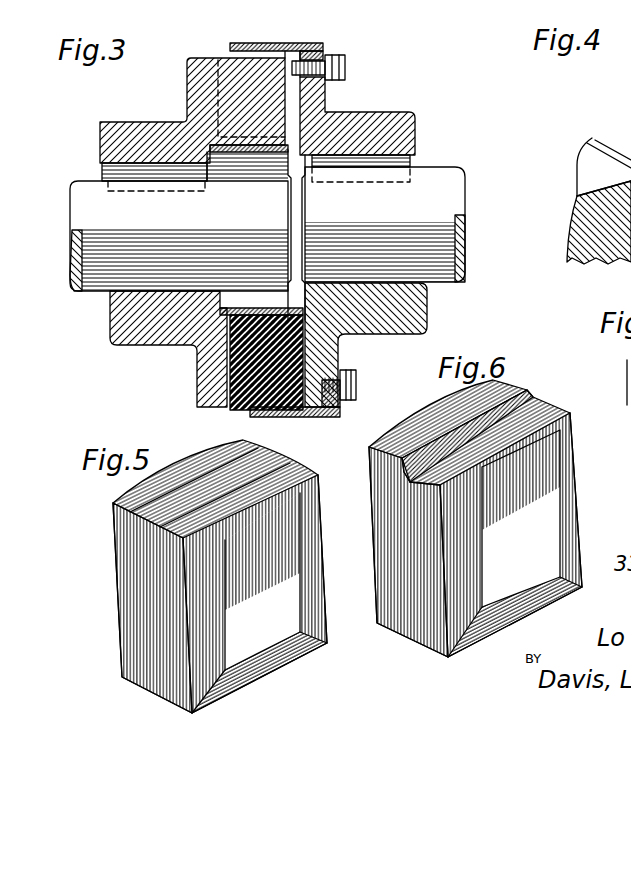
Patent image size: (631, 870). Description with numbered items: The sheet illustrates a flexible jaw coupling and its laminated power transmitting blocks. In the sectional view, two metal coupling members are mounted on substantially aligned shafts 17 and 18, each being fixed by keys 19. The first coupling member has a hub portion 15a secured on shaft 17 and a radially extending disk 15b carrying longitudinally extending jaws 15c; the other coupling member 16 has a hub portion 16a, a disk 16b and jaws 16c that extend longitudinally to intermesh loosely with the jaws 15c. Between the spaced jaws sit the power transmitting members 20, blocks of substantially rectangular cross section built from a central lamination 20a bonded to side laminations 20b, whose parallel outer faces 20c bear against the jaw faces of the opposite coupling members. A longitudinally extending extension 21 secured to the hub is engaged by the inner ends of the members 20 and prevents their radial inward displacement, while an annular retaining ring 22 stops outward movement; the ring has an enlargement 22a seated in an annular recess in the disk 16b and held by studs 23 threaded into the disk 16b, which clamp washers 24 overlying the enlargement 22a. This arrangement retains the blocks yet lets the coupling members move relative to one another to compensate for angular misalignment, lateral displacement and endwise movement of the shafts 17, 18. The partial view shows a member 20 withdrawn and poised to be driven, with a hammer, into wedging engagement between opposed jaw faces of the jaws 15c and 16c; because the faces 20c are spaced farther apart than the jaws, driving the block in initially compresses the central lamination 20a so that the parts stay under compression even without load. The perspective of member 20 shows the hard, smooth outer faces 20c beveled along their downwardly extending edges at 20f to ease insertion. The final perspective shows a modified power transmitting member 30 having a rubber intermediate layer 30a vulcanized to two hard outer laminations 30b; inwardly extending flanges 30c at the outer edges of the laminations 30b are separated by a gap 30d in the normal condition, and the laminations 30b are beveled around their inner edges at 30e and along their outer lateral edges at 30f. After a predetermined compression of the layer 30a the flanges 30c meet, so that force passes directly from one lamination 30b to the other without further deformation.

In FIG. 3, the hub portion 15a is at (107, 128).
In FIG. 3, the radially extending disk 15b is at (193, 93).
In FIG. 3, the longitudinally extending jaws 15c is at (235, 82).
In FIG. 4, the longitudinally extending jaws 15c is at (630, 118).
In FIG. 3, the coupling member 16 is at (377, 336).
In FIG. 3, the hub portion 16a is at (417, 108).
In FIG. 3, the disk 16b is at (309, 101).
In FIG. 4, the longitudinally extending jaws 16c is at (583, 238).
In FIG. 3, the shaft 17 is at (85, 293).
In FIG. 3, the shaft 18 is at (450, 198).
In FIG. 3, the keys 19 is at (103, 172).
In FIG. 3, the power transmitting members 20 is at (228, 52).
In FIG. 4, the power transmitting members 20 is at (573, 161).
In FIG. 5, the power transmitting members 20 is at (333, 571).
In FIG. 4, the central lamination 20a is at (605, 191).
In FIG. 5, the central lamination 20a is at (160, 688).
In FIG. 4, the side laminations 20b is at (595, 142).
In FIG. 5, the side laminations 20b is at (128, 647).
In FIG. 5, the outer faces 20c is at (300, 657).
In FIG. 5, the beveled edges 20f is at (317, 592).
In FIG. 3, the longitudinally extending extension 21 is at (251, 152).
In FIG. 3, the annular retaining ring 22 is at (257, 40).
In FIG. 3, the enlargement 22a is at (318, 36).
In FIG. 3, the studs 23 is at (342, 66).
In FIG. 3, the washers 24 is at (328, 52).
In FIG. 6, the power transmitting member 30 is at (416, 414).
In FIG. 6, the intermediate layer 30a is at (412, 623).
In FIG. 6, the outer laminations 30b is at (395, 463).
In FIG. 6, the inwardly extending flanges 30c is at (407, 482).
In FIG. 6, the gap 30d is at (530, 396).
In FIG. 6, the bevel 30e is at (533, 603).
In FIG. 6, the bevel 30f is at (570, 503).